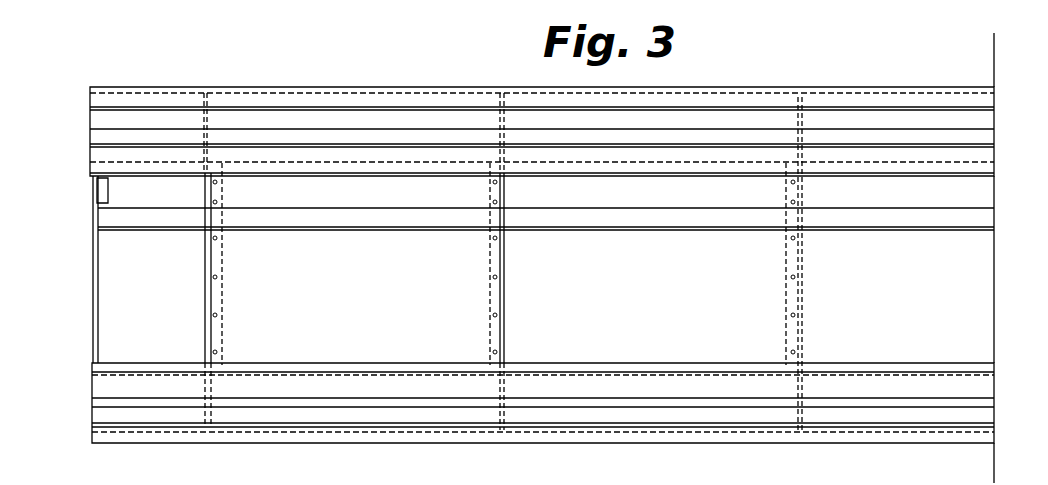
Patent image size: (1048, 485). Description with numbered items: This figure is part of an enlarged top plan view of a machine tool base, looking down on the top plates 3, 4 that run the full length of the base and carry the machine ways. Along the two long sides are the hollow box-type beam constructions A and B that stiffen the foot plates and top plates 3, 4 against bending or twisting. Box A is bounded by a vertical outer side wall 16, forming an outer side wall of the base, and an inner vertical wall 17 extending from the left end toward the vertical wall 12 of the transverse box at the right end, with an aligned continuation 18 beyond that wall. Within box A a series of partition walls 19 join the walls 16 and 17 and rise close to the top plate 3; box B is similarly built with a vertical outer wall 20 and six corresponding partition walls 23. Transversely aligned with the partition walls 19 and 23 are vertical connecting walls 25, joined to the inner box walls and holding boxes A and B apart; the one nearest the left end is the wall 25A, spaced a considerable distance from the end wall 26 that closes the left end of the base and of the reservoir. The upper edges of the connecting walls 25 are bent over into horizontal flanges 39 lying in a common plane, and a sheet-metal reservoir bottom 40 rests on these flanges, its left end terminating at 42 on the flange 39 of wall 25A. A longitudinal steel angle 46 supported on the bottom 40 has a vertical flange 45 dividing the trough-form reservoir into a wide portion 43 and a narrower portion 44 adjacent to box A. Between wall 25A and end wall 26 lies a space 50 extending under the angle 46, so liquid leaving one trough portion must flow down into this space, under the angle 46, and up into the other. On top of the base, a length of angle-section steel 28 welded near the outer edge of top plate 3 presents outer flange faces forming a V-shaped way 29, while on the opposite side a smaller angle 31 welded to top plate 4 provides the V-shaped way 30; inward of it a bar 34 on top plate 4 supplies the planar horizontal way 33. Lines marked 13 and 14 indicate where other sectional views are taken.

The longitudinal box construction A is at (383, 86).
The longitudinal box construction B is at (428, 440).
The top plate 3 is at (450, 87).
The top plate 4 is at (478, 440).
The vertical wall of box D 12 is at (330, 33).
The section line 13 is at (168, 33).
The section line 14 is at (58, 30).
The vertical outer side wall 16 is at (666, 93).
The inner vertical wall 17 is at (927, 163).
The continuation of inner wall 18 is at (580, 306).
The partition walls 19 is at (575, 205).
The vertical outer wall 20 is at (530, 432).
The partition walls 23 is at (815, 388).
The vertical connecting walls 25 is at (205, 252).
The left end connecting wall 25A is at (205, 296).
The end wall 26 is at (100, 348).
The angle-section steel 28 is at (918, 102).
The V-shaped way 29 is at (952, 110).
The V-shaped way 30 is at (855, 436).
The angle-section steel 31 is at (920, 437).
The planar horizontal way 33 is at (980, 387).
The bar 34 is at (972, 400).
The horizontal flanges 39 is at (222, 265).
The reservoir bottom 40 is at (980, 297).
The left end of reservoir bottom 42 is at (205, 327).
The wide portion 43 is at (980, 247).
The narrower portion 44 is at (985, 191).
The vertical flange 45 is at (383, 230).
The longitudinal steel angle 46 is at (100, 217).
The space 50 is at (108, 241).